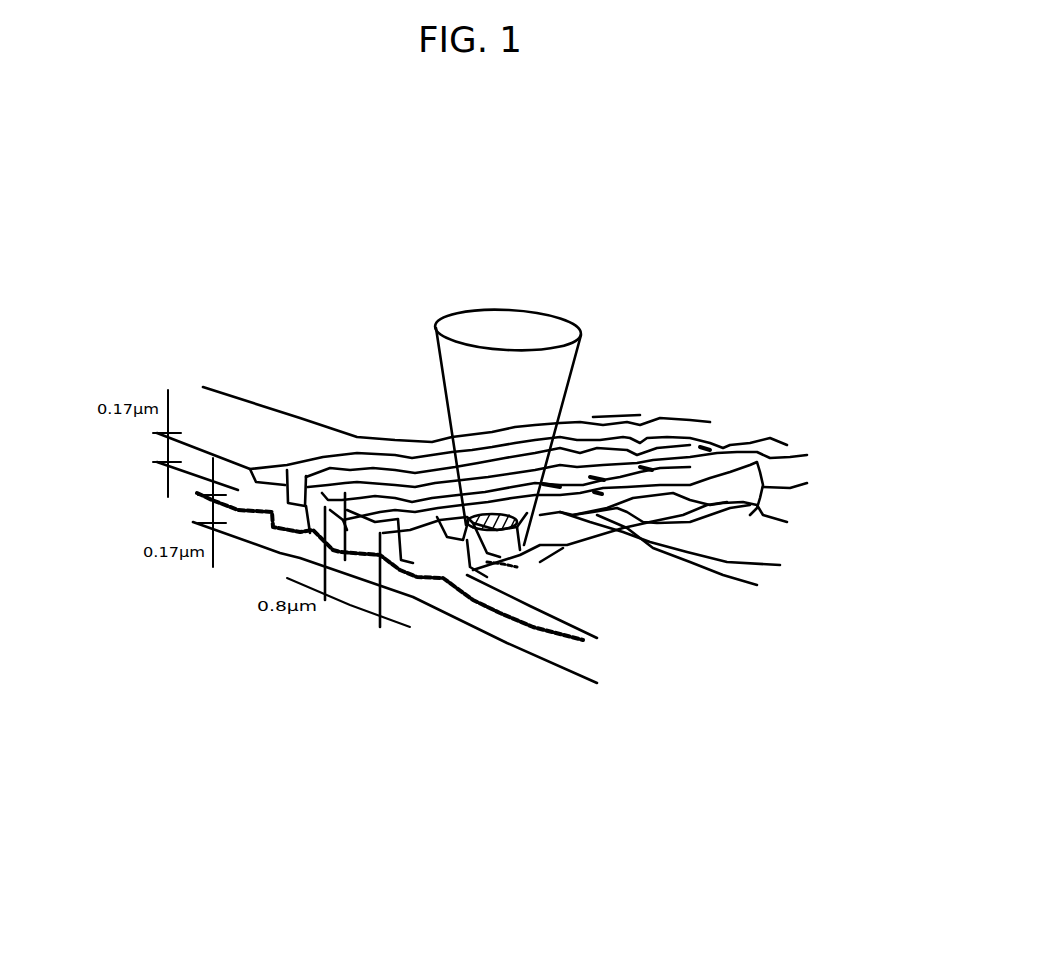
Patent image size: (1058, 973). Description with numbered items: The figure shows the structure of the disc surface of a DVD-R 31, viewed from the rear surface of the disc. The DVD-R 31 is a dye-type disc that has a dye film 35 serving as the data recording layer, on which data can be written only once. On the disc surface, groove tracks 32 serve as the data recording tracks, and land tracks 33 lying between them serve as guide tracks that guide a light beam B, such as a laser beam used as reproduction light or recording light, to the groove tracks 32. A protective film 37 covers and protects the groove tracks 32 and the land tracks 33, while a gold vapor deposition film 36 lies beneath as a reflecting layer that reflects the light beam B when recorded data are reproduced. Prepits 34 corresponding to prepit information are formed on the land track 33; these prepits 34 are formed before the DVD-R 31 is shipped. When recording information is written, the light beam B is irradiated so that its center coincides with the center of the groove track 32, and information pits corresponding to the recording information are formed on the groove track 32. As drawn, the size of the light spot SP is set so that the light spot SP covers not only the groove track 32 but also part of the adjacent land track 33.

The DVD-R 31 is at (726, 791).
The groove track 32 is at (542, 450).
The land track 33 is at (439, 433).
The prepit 34 is at (610, 393).
The dye film 35 is at (493, 590).
The gold vapor deposition film 36 is at (395, 635).
The protective film 37 is at (211, 388).
The light beam B is at (606, 343).
The light spot SP is at (703, 572).